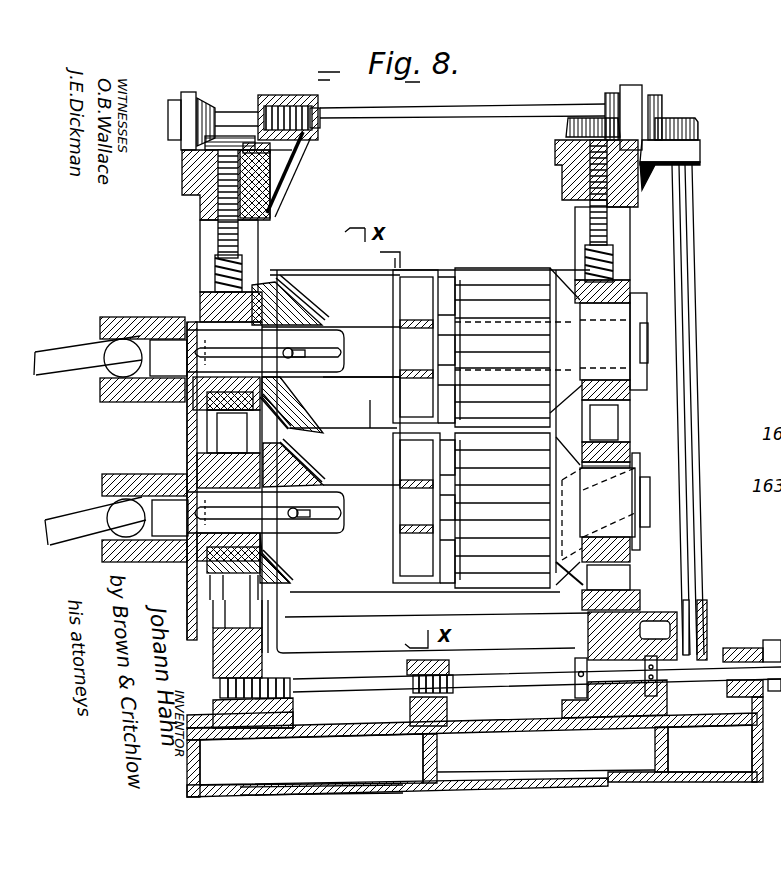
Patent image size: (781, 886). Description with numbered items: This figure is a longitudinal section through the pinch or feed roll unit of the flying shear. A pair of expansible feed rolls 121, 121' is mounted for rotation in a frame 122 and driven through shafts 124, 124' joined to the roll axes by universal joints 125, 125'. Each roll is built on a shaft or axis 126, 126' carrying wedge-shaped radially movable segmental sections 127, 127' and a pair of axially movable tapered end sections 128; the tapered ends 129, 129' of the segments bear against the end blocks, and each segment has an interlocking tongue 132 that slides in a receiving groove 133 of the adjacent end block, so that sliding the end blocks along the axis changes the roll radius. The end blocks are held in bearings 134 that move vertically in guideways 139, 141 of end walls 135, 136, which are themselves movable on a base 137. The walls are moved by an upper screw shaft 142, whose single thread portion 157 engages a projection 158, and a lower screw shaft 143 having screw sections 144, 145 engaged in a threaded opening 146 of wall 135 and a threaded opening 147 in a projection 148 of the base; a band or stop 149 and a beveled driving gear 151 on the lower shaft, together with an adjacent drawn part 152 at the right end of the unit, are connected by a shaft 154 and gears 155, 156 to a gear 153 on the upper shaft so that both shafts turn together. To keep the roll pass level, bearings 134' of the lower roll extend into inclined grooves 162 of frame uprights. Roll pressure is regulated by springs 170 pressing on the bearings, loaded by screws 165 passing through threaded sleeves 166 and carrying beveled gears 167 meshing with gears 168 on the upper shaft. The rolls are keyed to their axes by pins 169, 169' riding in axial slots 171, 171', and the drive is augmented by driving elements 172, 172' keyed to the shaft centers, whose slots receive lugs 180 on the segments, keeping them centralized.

The expansible feed roll 121 is at (518, 396).
The expansible feed roll 121' is at (545, 542).
The frame 122 is at (494, 760).
The shaft 124 is at (88, 344).
The shaft 124' is at (94, 510).
The universal joint 125 is at (124, 347).
The universal joint 125' is at (125, 506).
The shaft or axis 126 is at (285, 351).
The shaft or axis 126' is at (287, 512).
The segmental section 127 is at (425, 316).
The segmental section 127' is at (424, 508).
The end section 128 is at (225, 430).
The tapered end 129 is at (326, 326).
The tapered end 129' is at (330, 432).
The interlocking tongue 132 is at (270, 275).
The receiving groove 133 is at (270, 270).
The bearing 134 is at (440, 290).
The bearing 134' is at (438, 477).
The end wall 135 is at (200, 214).
The end wall 136 is at (640, 198).
The base 137 is at (642, 812).
The guideway 139 is at (200, 236).
The guideway 141 is at (615, 222).
The screw shaft 142 is at (488, 106).
The screw shaft 143 is at (475, 678).
The screw section 144 is at (300, 640).
The screw section 145 is at (412, 686).
The threaded opening 146 is at (210, 682).
The threaded opening 147 is at (407, 662).
The projection 148 is at (447, 700).
The band or stop 149 is at (575, 668).
The beveled driving gear 151 is at (680, 700).
The plate 152 is at (760, 648).
The gear 153 is at (655, 92).
The shaft 154 is at (700, 150).
The gear 155 is at (698, 124).
The gear 156 is at (712, 648).
The thread portion 157 is at (318, 112).
The projection 158 is at (280, 95).
The groove 162 is at (275, 580).
The screw 165 is at (218, 252).
The threaded sleeve 166 is at (205, 196).
The beveled gear 167 is at (248, 112).
The gear 168 is at (203, 95).
The pin 169 is at (287, 362).
The pin 169' is at (305, 522).
The spring 170 is at (215, 274).
The axial slot 171 is at (224, 347).
The axial slot 171' is at (225, 507).
The driving element 172 is at (456, 350).
The driving element 172' is at (463, 510).
The lug 180 is at (425, 275).